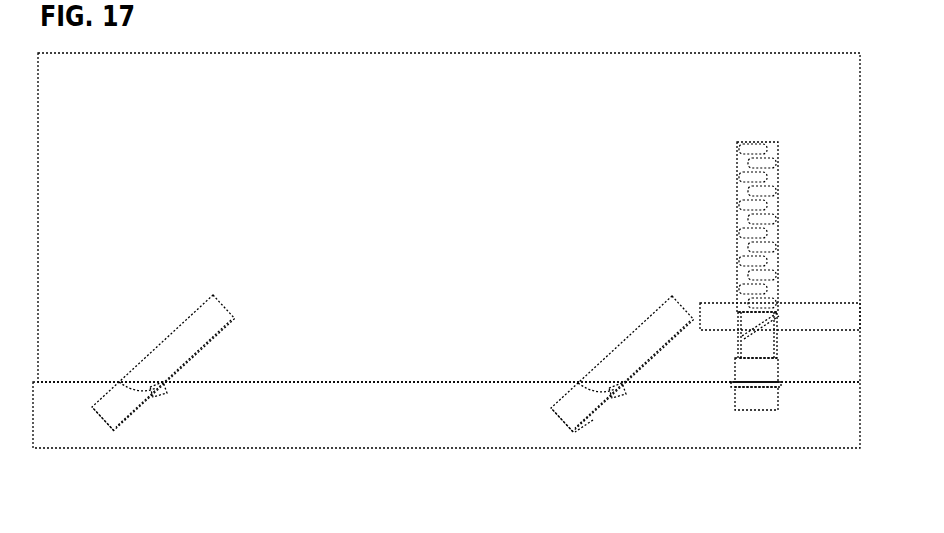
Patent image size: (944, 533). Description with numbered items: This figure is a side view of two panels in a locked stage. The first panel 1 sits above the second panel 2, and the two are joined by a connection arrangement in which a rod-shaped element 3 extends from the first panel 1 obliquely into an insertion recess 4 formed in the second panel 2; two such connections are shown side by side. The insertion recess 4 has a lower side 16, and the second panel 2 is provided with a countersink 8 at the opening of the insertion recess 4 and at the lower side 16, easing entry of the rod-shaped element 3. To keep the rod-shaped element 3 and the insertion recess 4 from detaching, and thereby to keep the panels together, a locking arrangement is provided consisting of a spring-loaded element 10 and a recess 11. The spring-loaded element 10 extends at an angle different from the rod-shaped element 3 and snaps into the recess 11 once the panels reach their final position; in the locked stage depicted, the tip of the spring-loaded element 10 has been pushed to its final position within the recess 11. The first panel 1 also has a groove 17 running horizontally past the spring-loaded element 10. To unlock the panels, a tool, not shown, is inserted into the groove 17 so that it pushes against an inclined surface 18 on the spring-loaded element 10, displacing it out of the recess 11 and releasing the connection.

The first panel 1 is at (347, 203).
The second panel 2 is at (413, 416).
The rod-shaped element 3 is at (183, 352).
The insertion recess 4 is at (115, 433).
The countersink 8 is at (170, 387).
The spring-loaded element 10 is at (757, 193).
The recess 11 is at (732, 398).
The lower side 16 is at (595, 413).
The groove 17 is at (817, 303).
The inclined surface 18 is at (757, 330).